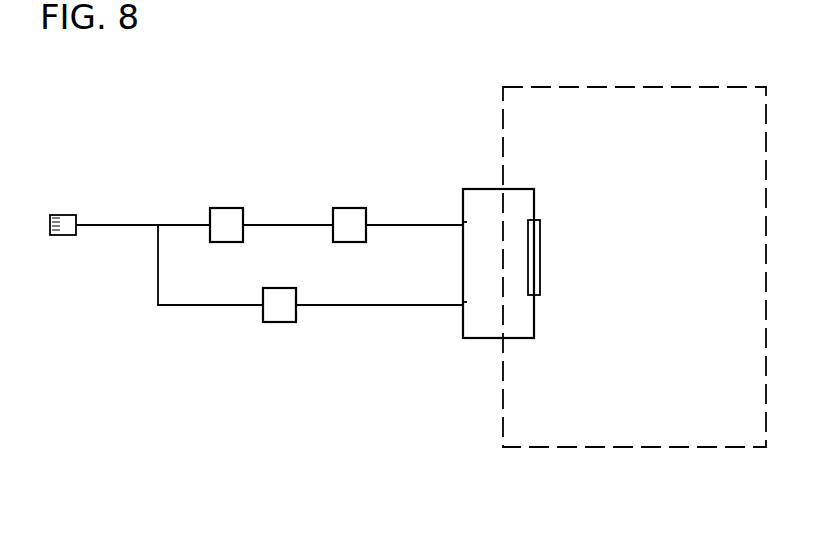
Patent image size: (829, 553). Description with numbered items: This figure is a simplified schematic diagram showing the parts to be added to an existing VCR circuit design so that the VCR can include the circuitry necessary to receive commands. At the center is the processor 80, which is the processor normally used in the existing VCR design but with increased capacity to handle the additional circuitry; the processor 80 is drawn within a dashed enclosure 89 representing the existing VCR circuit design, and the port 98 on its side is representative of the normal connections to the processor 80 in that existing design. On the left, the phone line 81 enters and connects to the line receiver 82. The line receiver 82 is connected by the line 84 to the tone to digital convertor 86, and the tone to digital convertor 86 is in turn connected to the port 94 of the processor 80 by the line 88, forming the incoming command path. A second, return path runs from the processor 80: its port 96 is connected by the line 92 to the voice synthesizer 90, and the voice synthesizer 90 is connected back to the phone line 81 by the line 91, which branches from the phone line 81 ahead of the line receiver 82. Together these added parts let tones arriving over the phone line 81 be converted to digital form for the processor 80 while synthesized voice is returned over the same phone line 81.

The processor 80 is at (525, 189).
The phone line 81 is at (97, 224).
The line receiver 82 is at (216, 208).
The line 84 is at (268, 224).
The tone to digital convertor 86 is at (340, 208).
The line 88 is at (392, 224).
The housing enclosure 89 is at (694, 87).
The voice synthesizer 90 is at (278, 322).
The line 91 is at (210, 305).
The line 92 is at (393, 307).
The port 94 is at (482, 225).
The port 96 is at (482, 304).
The port 98 is at (541, 254).